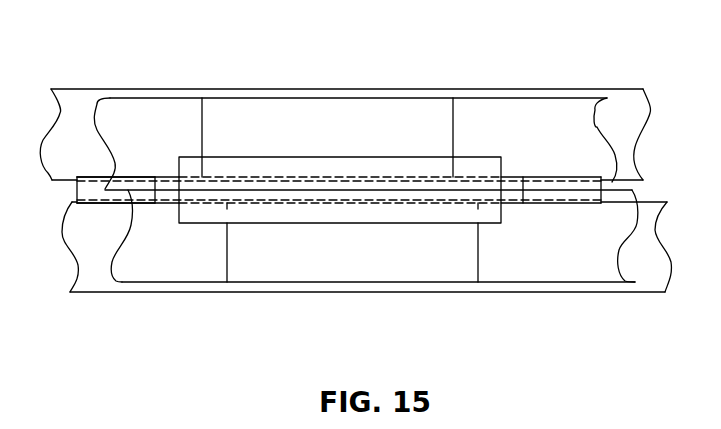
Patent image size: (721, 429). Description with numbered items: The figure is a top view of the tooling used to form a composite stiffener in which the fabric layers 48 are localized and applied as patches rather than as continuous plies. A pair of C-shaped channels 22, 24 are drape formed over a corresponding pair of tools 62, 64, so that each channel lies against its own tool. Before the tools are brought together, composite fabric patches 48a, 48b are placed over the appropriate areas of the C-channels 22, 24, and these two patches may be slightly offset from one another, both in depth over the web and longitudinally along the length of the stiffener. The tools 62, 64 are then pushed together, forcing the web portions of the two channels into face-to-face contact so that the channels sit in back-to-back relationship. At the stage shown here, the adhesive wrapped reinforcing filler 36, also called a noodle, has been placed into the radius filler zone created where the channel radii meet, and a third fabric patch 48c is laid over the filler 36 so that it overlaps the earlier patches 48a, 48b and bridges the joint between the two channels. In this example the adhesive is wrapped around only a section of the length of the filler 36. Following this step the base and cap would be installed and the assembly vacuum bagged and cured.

The tool 62 is at (74, 107).
The C-shaped channel 22 is at (172, 115).
The C-shaped channel 24 is at (193, 252).
The tool 64 is at (98, 267).
The reinforcing filler 36 is at (133, 183).
The fabric layers 48 is at (516, 198).
The fabric patch 48a is at (387, 122).
The fabric patch 48b is at (432, 255).
The third fabric patch 48c is at (482, 165).